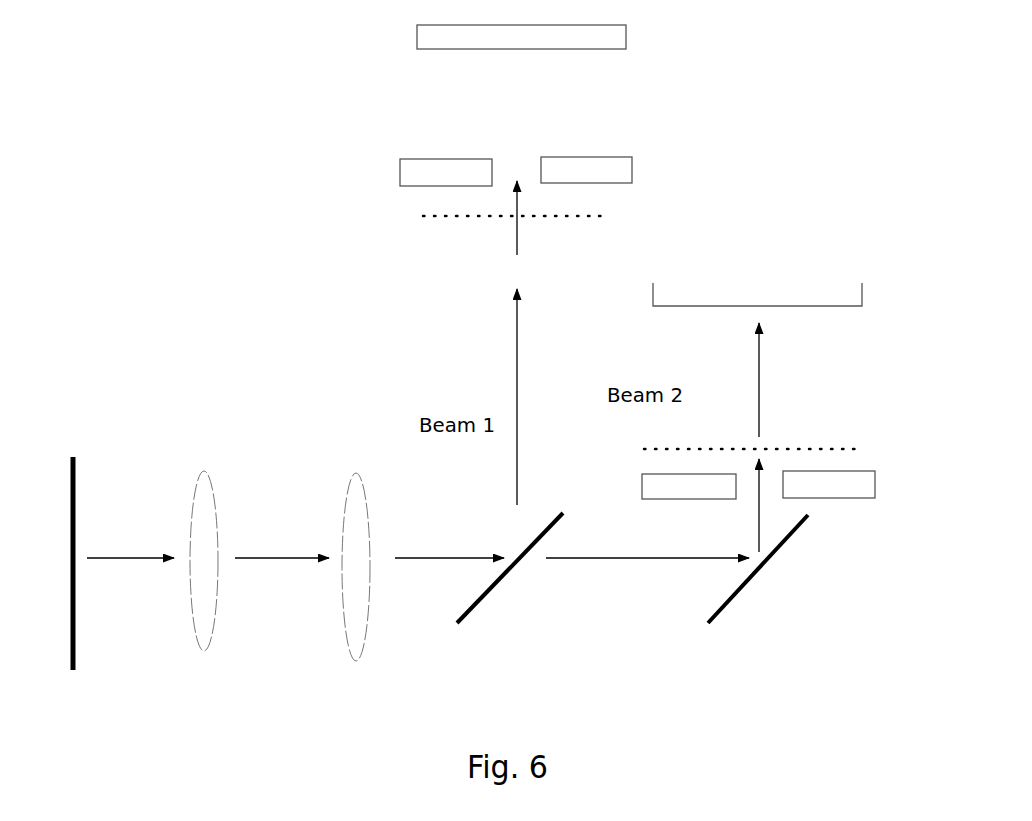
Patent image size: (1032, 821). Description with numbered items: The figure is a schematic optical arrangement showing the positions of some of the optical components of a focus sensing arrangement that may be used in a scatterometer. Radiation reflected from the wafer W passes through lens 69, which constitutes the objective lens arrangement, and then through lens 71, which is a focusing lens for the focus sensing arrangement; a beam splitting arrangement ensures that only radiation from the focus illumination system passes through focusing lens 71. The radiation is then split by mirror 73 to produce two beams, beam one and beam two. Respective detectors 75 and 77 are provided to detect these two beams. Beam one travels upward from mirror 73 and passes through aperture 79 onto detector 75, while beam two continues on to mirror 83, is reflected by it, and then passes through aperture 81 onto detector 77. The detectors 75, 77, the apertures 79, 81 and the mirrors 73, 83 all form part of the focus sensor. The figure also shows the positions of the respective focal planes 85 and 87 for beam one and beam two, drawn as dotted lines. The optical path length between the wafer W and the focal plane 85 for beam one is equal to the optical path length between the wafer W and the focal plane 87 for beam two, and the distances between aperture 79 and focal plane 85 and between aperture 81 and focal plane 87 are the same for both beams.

The wafer W is at (74, 672).
The lens 69 is at (202, 647).
The lens 71 is at (353, 662).
The mirror 73 is at (468, 617).
The detector 75 is at (425, 37).
The detector 77 is at (870, 297).
The aperture 79 is at (405, 175).
The aperture 81 is at (865, 486).
The mirror 83 is at (727, 606).
The focal plane 85 is at (420, 217).
The focal plane 87 is at (862, 451).